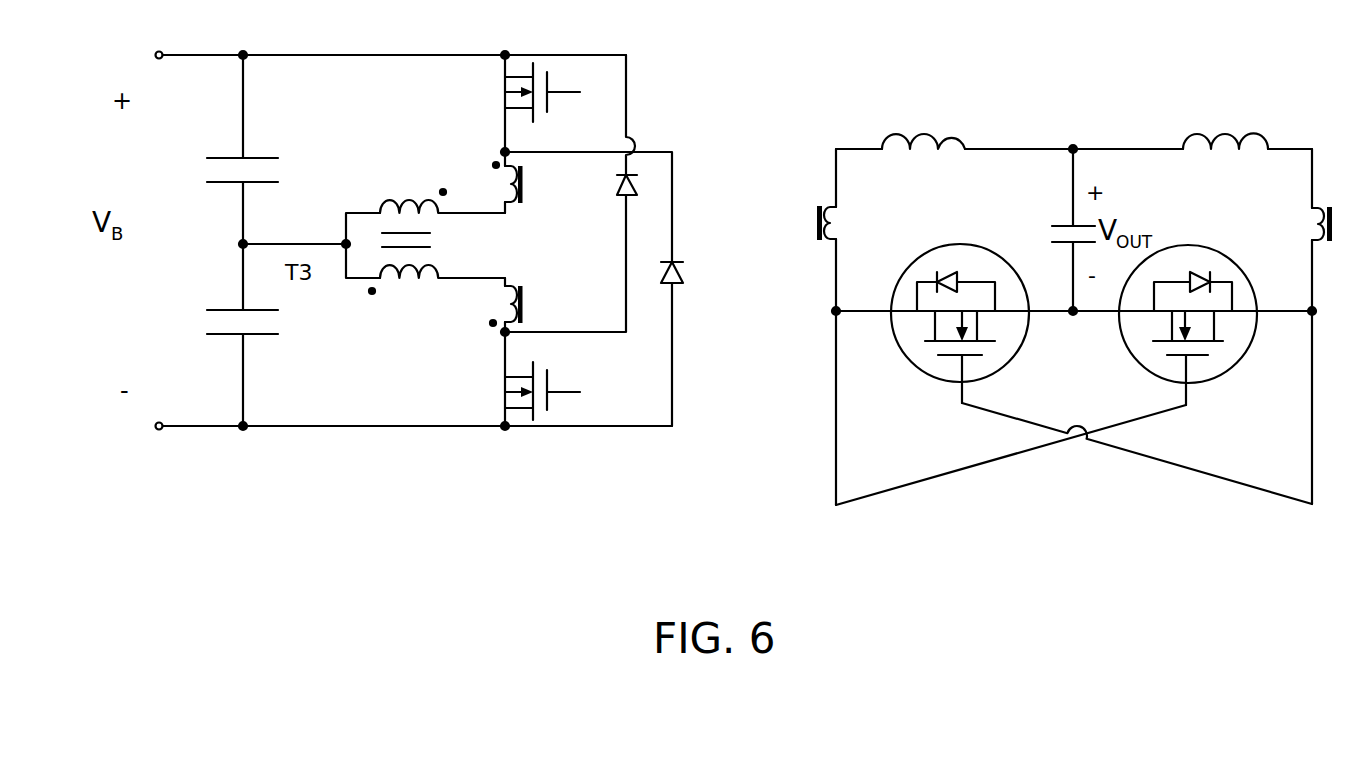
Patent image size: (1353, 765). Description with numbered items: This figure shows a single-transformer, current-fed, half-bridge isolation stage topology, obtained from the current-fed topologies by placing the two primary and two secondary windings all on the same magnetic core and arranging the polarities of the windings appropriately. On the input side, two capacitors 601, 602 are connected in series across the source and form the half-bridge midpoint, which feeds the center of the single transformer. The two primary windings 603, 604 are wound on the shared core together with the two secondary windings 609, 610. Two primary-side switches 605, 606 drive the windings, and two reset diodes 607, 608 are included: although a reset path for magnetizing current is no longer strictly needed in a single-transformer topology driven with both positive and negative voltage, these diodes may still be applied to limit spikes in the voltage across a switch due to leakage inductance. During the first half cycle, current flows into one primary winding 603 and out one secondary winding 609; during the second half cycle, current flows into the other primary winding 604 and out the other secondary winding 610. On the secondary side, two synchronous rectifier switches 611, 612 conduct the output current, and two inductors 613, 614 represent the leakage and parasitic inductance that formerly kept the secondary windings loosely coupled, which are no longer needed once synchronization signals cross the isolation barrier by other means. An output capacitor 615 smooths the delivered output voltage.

The capacitor C_X 601 is at (223, 157).
The capacitor C_Y 602 is at (222, 335).
The primary winding T_P1 603 is at (510, 185).
The primary winding T_P2 604 is at (512, 297).
The MOSFET switch 605 is at (548, 105).
The MOSFET switch 606 is at (548, 387).
The diode 607 is at (677, 283).
The diode 608 is at (618, 198).
The secondary winding T_S1 609 is at (838, 222).
The secondary winding T_S2 610 is at (1322, 225).
The synchronous rectifier MOSFET 611 is at (920, 372).
The synchronous rectifier MOSFET 612 is at (1220, 377).
The inductor L_P1 613 is at (962, 135).
The inductor L_P2 / transformer T3 winding 614 is at (380, 202).
The output capacitor C_OUT / transformer T3 winding 615 is at (400, 281).